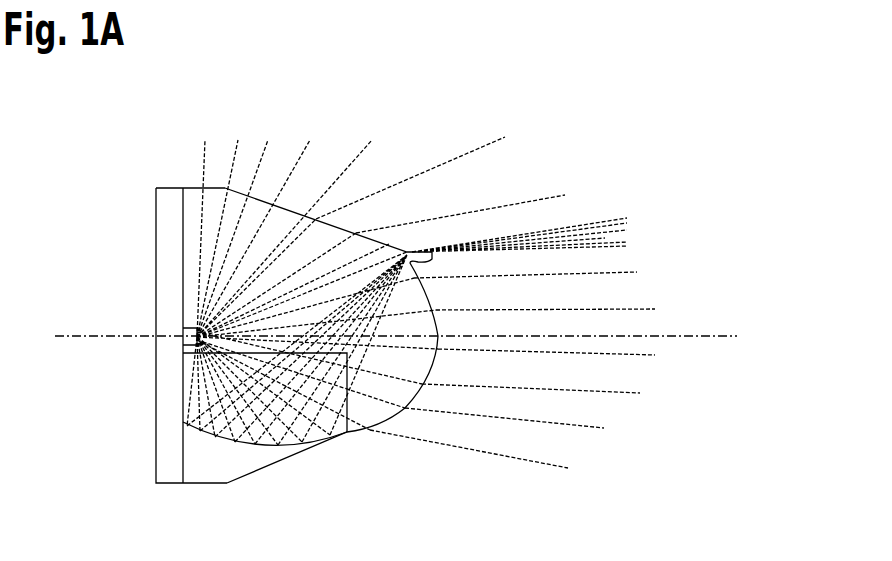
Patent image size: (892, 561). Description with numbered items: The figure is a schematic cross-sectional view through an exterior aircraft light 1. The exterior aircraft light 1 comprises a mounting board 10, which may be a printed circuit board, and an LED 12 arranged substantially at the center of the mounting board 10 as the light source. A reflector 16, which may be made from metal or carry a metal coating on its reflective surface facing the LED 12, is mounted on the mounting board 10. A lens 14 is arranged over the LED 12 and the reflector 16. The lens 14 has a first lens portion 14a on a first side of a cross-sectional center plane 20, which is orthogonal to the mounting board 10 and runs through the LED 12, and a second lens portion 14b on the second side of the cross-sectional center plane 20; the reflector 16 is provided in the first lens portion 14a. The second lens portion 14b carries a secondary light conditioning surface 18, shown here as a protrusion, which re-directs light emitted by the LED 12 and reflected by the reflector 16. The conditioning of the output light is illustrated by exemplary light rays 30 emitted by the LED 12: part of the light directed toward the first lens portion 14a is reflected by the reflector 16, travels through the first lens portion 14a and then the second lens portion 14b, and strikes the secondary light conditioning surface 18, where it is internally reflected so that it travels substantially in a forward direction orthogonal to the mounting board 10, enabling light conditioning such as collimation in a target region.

The exterior aircraft light 1 is at (655, 162).
The mounting board 10 is at (165, 425).
The LED 12 is at (183, 332).
The lens 14 is at (421, 401).
The first lens portion 14a is at (373, 387).
The second lens portion 14b is at (190, 255).
The reflector 16 is at (283, 425).
The secondary light conditioning surface 18 is at (435, 250).
The cross-sectional center plane 20 is at (718, 336).
The exemplary light rays 30 is at (622, 310).